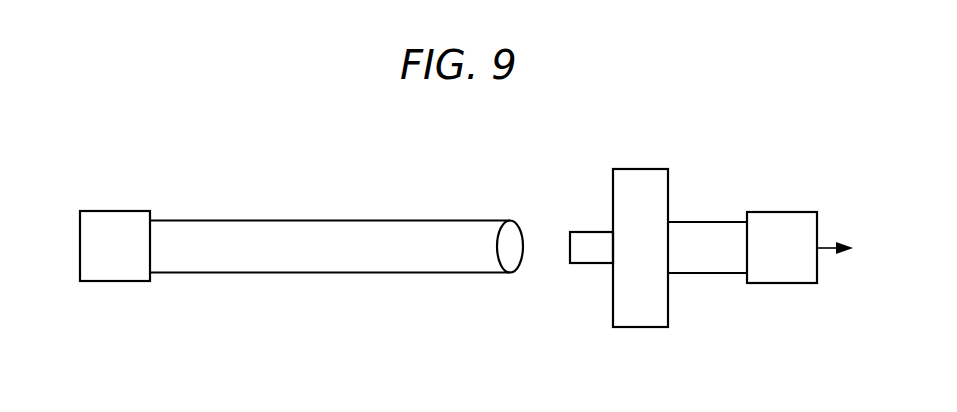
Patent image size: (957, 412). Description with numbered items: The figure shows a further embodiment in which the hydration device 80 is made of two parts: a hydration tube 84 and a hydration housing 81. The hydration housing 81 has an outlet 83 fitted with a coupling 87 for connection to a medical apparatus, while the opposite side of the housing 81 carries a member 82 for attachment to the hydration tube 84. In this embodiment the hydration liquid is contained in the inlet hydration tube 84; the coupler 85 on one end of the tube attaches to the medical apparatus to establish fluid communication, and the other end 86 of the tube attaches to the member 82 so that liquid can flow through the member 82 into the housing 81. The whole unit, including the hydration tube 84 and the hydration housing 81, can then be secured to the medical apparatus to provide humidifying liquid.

The hydration device 80 is at (468, 166).
The hydration housing 81 is at (635, 169).
The member 82 is at (588, 245).
The outlet 83 is at (708, 238).
The hydration tube 84 is at (347, 230).
The coupler 85 is at (108, 211).
The other end 86 is at (513, 253).
The coupling 87 is at (783, 212).